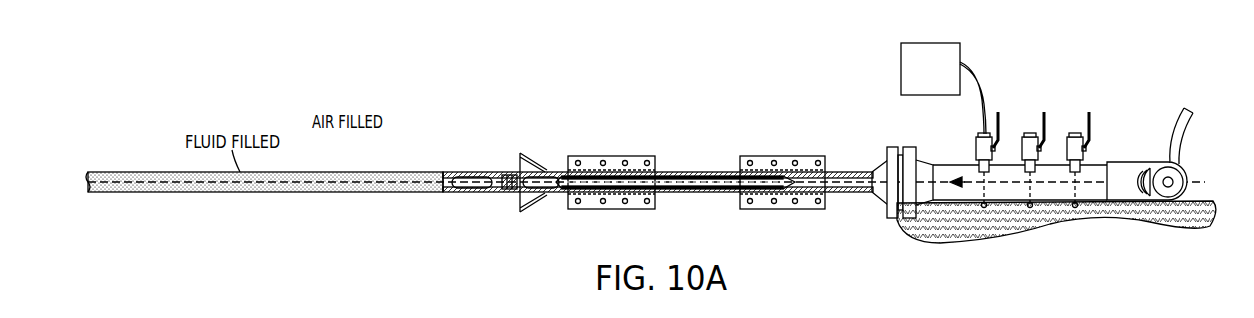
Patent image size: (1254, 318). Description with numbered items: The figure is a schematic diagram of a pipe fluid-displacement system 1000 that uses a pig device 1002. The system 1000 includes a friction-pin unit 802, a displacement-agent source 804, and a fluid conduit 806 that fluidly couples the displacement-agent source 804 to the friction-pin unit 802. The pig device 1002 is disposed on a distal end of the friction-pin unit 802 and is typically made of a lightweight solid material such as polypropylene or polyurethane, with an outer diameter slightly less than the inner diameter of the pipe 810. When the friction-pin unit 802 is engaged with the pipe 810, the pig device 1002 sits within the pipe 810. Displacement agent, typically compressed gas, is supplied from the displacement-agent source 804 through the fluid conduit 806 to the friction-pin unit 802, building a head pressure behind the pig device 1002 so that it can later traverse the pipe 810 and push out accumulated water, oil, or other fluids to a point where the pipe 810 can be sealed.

The friction-pin unit 802 is at (703, 172).
The displacement-agent source 804 is at (944, 79).
The fluid conduit 806 is at (983, 92).
The pipe 810 is at (358, 172).
The pipe fluid-displacement system 1000 is at (1189, 96).
The pig device 1002 is at (465, 195).